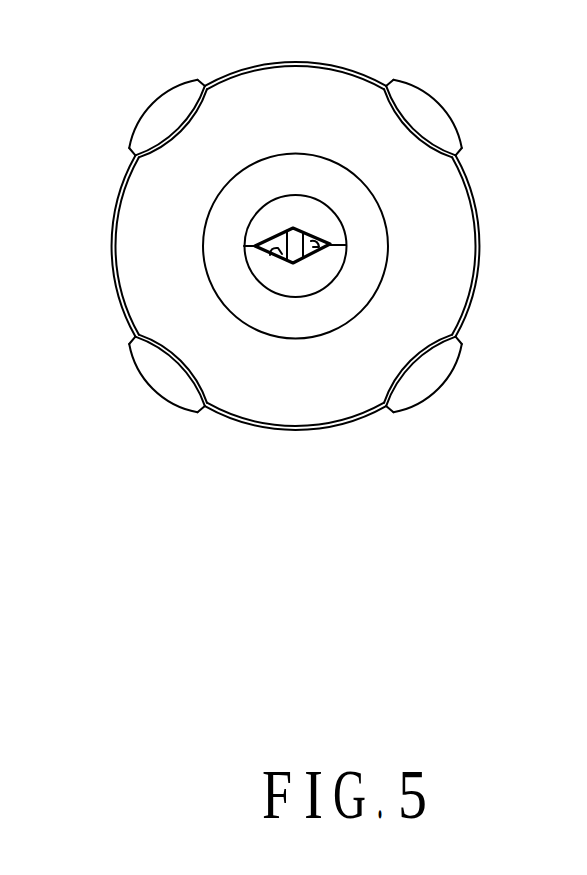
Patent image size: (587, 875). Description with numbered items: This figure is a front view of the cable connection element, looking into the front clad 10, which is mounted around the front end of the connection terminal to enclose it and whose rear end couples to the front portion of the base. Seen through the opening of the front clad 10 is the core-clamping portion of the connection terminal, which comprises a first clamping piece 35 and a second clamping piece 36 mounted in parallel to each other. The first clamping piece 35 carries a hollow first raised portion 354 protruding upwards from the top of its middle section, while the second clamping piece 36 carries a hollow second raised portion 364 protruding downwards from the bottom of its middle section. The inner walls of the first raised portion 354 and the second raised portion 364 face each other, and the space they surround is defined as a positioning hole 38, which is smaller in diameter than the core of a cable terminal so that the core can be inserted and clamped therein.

The front clad 10 is at (333, 88).
The first clamping piece 35 is at (325, 220).
The second clamping piece 36 is at (323, 265).
The positioning hole 38 is at (276, 237).
The first raised portion 354 is at (331, 244).
The second raised portion 364 is at (256, 251).